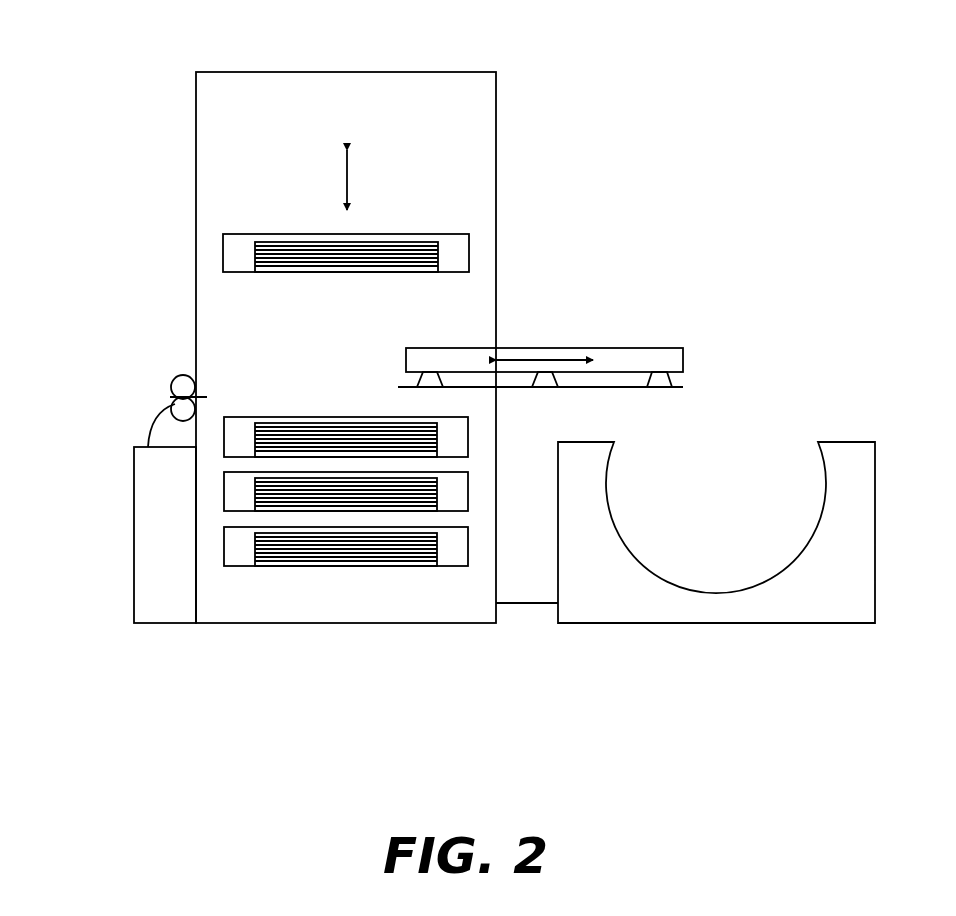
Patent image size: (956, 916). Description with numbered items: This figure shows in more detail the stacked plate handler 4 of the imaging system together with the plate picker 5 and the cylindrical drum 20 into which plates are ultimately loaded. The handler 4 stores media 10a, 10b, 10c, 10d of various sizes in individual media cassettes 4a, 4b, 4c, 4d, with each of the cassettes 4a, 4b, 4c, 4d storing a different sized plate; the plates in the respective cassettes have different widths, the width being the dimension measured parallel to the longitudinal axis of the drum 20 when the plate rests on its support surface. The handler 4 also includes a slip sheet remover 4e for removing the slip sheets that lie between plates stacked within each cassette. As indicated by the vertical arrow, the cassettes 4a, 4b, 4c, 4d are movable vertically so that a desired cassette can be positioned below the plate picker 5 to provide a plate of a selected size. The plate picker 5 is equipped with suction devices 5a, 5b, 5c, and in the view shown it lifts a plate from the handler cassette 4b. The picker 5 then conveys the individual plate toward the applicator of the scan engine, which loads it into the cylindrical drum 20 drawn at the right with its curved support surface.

The stacked plate handler 4 is at (444, 88).
The media cassette 4a is at (447, 236).
The media cassette 4b is at (455, 442).
The media cassette 4c is at (455, 497).
The media cassette 4d is at (455, 555).
The slip sheet remover 4e is at (155, 564).
The plate picker 5 is at (624, 360).
The suction device 5a is at (430, 380).
The suction device 5b is at (545, 380).
The suction device 5c is at (660, 380).
The media 10a is at (265, 252).
The media 10b is at (267, 433).
The media 10c is at (268, 493).
The media 10d is at (293, 555).
The cylindrical drum 20 is at (861, 604).